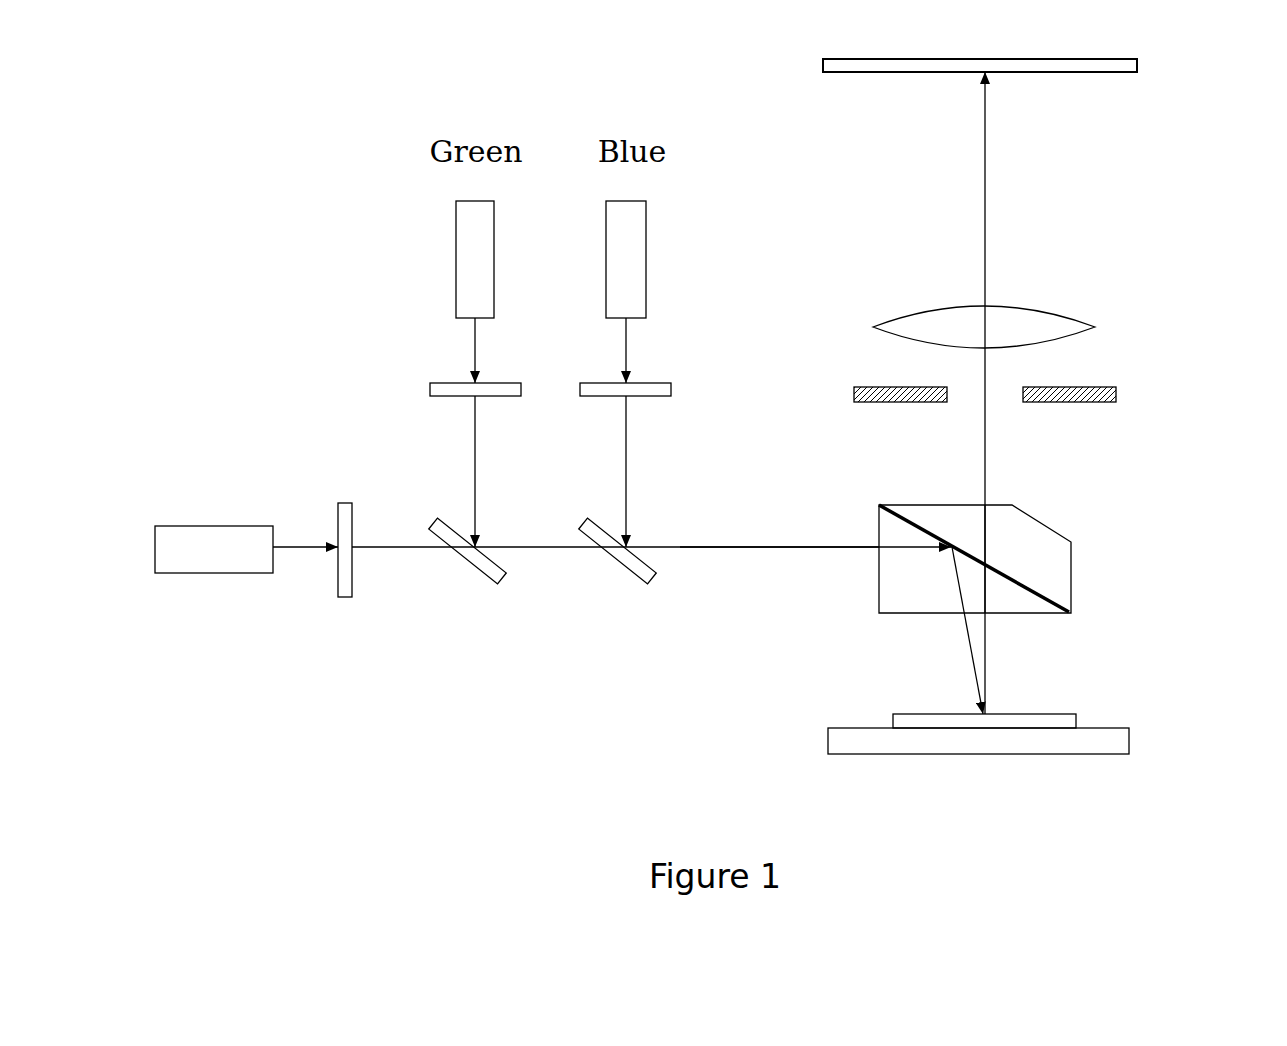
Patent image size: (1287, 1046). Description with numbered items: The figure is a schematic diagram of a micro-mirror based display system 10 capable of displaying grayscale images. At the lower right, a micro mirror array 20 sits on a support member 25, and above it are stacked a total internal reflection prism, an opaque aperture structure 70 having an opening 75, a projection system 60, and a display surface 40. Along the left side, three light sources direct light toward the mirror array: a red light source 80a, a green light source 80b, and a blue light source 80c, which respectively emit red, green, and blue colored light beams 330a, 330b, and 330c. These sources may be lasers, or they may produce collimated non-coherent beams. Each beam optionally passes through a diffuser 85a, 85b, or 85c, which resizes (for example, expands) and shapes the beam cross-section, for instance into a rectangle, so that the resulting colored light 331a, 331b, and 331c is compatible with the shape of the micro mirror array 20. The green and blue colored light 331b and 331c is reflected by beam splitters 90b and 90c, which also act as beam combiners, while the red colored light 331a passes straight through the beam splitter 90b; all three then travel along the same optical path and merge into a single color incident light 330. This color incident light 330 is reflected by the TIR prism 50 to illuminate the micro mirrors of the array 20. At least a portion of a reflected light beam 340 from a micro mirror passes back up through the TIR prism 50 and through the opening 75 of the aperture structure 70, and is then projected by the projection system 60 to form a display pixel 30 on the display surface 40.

The display system 10 is at (1140, 229).
The micro mirror array 20 is at (1055, 713).
The support member 25 is at (1115, 740).
The display pixel 30 is at (992, 75).
The display surface 40 is at (1091, 63).
The total internal reflection (TIR) prism 50 is at (1047, 552).
The projection system 60 is at (933, 323).
The opaque aperture structure 70 is at (865, 393).
The opening 75 is at (1012, 414).
The red light source 80a is at (182, 540).
The green light source 80b is at (475, 247).
The blue light source 80c is at (630, 247).
The diffuser 85a is at (345, 585).
The diffuser 85b is at (462, 392).
The diffuser 85c is at (607, 390).
The beam splitter 90b is at (490, 568).
The beam splitter 90c is at (637, 566).
The color incident light 330 is at (790, 548).
The red colored light beam 330a is at (312, 546).
The green colored light beam 330b is at (474, 348).
The blue colored light beam 330c is at (625, 343).
The colored light 331a is at (428, 550).
The colored light 331b is at (473, 478).
The colored light 331c is at (625, 476).
The reflected light beam 340 is at (985, 483).